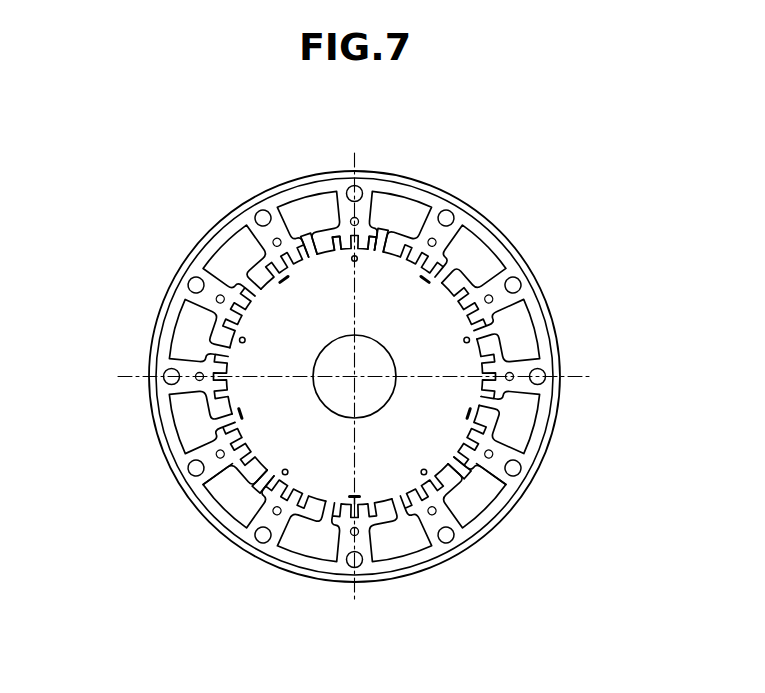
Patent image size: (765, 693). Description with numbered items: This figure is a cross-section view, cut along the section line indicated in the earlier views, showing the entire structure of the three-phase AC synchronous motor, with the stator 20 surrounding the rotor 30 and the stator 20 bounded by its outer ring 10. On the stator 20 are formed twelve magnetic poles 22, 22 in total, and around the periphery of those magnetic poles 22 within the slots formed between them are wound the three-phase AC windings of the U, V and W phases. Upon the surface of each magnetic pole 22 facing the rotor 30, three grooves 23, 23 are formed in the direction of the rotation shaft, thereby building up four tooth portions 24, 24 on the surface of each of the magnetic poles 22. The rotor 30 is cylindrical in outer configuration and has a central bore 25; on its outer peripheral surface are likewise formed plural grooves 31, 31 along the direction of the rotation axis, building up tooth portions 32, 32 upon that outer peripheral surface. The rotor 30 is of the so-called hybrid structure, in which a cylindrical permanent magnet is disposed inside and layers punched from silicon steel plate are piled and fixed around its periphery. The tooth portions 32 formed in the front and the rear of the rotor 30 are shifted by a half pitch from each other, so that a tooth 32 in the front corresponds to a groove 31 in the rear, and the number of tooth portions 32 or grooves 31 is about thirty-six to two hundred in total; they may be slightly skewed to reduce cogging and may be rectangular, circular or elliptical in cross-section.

The stator core outer ring 10 is at (467, 201).
The stator 20 is at (531, 290).
The magnetic pole 22 is at (273, 233).
The groove 23 is at (336, 245).
The tooth portion 24 is at (322, 240).
The center bore 25 is at (337, 393).
The rotor 30 is at (427, 395).
The groove 31 is at (252, 460).
The tooth portion 32 is at (242, 472).